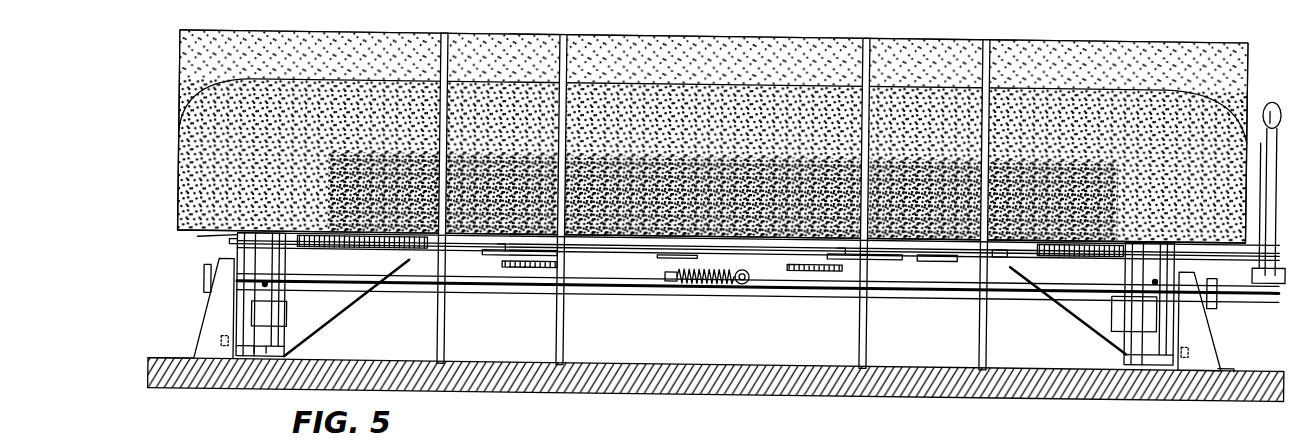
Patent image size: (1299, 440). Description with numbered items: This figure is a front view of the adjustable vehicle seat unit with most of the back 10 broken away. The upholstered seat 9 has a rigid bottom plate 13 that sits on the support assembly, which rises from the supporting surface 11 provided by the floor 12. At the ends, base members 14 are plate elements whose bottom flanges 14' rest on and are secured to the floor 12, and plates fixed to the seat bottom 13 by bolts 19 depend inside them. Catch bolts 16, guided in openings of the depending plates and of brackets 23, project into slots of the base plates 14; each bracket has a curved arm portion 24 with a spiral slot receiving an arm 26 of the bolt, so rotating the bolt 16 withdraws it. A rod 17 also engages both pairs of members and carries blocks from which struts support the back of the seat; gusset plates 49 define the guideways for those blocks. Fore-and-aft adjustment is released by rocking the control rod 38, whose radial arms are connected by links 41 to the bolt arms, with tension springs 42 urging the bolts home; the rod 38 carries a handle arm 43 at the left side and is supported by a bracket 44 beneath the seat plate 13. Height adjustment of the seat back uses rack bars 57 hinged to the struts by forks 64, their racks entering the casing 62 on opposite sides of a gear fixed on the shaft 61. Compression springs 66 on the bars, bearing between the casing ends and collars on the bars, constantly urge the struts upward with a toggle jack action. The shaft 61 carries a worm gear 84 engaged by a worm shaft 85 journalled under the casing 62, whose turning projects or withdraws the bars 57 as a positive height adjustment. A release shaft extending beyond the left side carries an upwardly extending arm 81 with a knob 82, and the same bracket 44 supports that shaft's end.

The seat 9 is at (180, 162).
The back 10 is at (180, 73).
The supporting surface 11 is at (160, 357).
The floor 12 is at (154, 373).
The bottom plate 13 is at (200, 236).
The base member 14 is at (705, 314).
The flange 14' is at (1246, 370).
The catch bolt 16 is at (290, 342).
The rod 17 is at (896, 292).
The bolt 19 is at (238, 241).
The bracket 23 is at (262, 355).
The arm portion 24 is at (270, 357).
The arm 26 is at (260, 322).
The rod 38 is at (935, 252).
The link 41 is at (1172, 283).
The tension spring 42 is at (261, 275).
The radial arm 43 is at (1260, 100).
The bracket 44 is at (1222, 290).
The gusset plate 49 is at (351, 293).
The rack bar 57 is at (470, 252).
The shaft 61 is at (704, 279).
The casing 62 is at (650, 250).
The fork 64 is at (1000, 258).
The compression spring 66 is at (547, 256).
The arm 81 is at (1270, 92).
The knob 82 is at (1282, 92).
The worm gear 84 is at (678, 262).
The worm shaft 85 is at (758, 278).